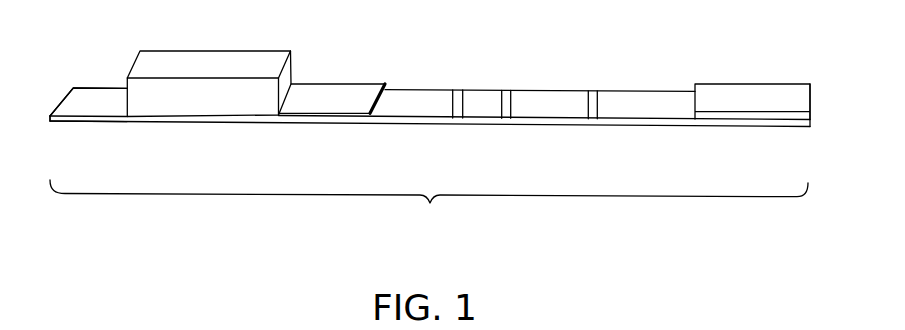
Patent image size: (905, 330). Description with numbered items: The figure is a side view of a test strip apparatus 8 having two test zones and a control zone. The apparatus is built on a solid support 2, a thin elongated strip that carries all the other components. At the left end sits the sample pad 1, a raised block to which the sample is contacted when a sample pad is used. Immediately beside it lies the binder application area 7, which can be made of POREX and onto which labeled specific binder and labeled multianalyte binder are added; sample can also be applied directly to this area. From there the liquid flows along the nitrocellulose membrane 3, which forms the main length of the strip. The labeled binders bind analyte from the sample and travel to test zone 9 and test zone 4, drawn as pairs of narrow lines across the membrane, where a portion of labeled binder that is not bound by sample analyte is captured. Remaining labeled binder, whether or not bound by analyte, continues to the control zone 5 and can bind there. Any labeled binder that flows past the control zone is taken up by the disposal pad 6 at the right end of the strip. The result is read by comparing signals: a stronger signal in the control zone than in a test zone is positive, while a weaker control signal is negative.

The sample pad 1 is at (205, 60).
The solid support 2 is at (86, 122).
The nitrocellulose membrane 3 is at (412, 108).
The test zone 4 is at (507, 91).
The control zone 5 is at (593, 92).
The disposal pad 6 is at (748, 92).
The binder application area 7 is at (333, 93).
The test strip apparatus 8 is at (429, 207).
The test zone 9 is at (457, 91).